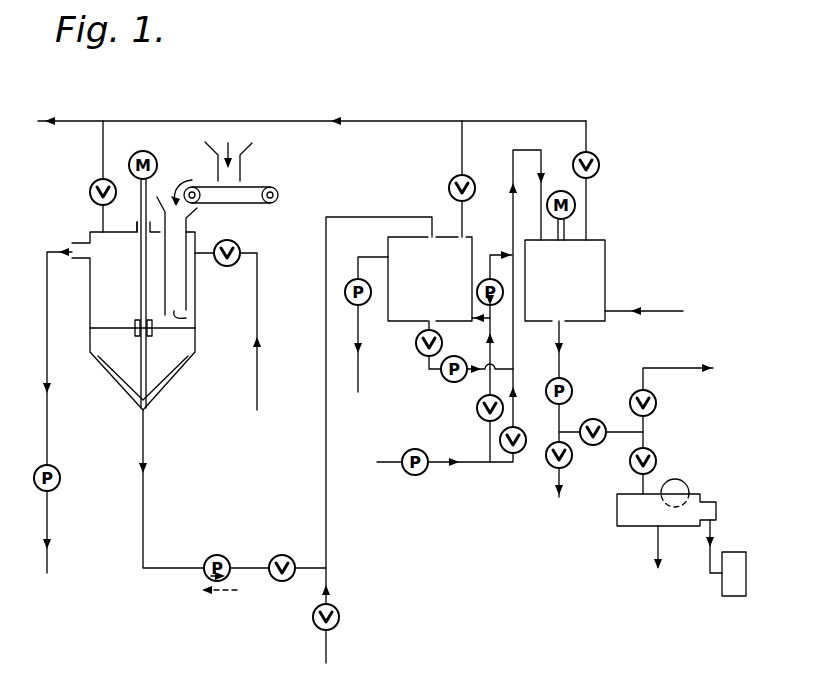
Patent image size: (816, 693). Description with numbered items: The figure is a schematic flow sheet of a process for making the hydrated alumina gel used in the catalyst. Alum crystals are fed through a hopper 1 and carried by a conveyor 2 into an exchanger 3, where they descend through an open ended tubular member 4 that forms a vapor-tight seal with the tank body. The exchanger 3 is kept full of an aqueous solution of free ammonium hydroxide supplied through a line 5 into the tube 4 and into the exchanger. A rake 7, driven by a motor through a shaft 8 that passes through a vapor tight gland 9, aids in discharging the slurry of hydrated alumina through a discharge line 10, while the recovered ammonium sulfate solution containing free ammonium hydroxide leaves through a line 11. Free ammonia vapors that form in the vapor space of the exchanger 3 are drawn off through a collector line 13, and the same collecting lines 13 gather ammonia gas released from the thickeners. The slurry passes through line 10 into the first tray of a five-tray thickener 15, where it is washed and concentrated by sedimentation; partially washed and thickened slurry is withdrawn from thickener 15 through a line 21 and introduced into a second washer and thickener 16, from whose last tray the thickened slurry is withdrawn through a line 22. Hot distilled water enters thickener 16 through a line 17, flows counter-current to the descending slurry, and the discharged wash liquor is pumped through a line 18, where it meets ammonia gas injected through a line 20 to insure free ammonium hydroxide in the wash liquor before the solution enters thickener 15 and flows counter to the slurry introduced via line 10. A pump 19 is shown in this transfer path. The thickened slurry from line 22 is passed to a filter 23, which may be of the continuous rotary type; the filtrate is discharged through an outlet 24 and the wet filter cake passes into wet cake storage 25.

The hopper 1 is at (244, 138).
The conveyor 2 is at (250, 185).
The exchanger 3 is at (122, 270).
The open ended tubular member 4 is at (195, 321).
The line 5 is at (257, 313).
The rake 7 is at (187, 362).
The shaft 8 is at (141, 303).
The vapor tight gland 9 is at (137, 224).
The discharge line 10 is at (146, 485).
The line 11 is at (47, 422).
The collector line 13 is at (103, 213).
The thickener 15 is at (440, 285).
The washer and thickener 16 is at (574, 288).
The line 17 is at (670, 312).
The line 18 is at (513, 250).
The pump 19 is at (490, 344).
The line 20 is at (514, 415).
The line 21 is at (428, 327).
The line 22 is at (565, 363).
The filter 23 is at (617, 513).
The filtrate discharge 24 is at (656, 549).
The wet cake storage 25 is at (730, 585).